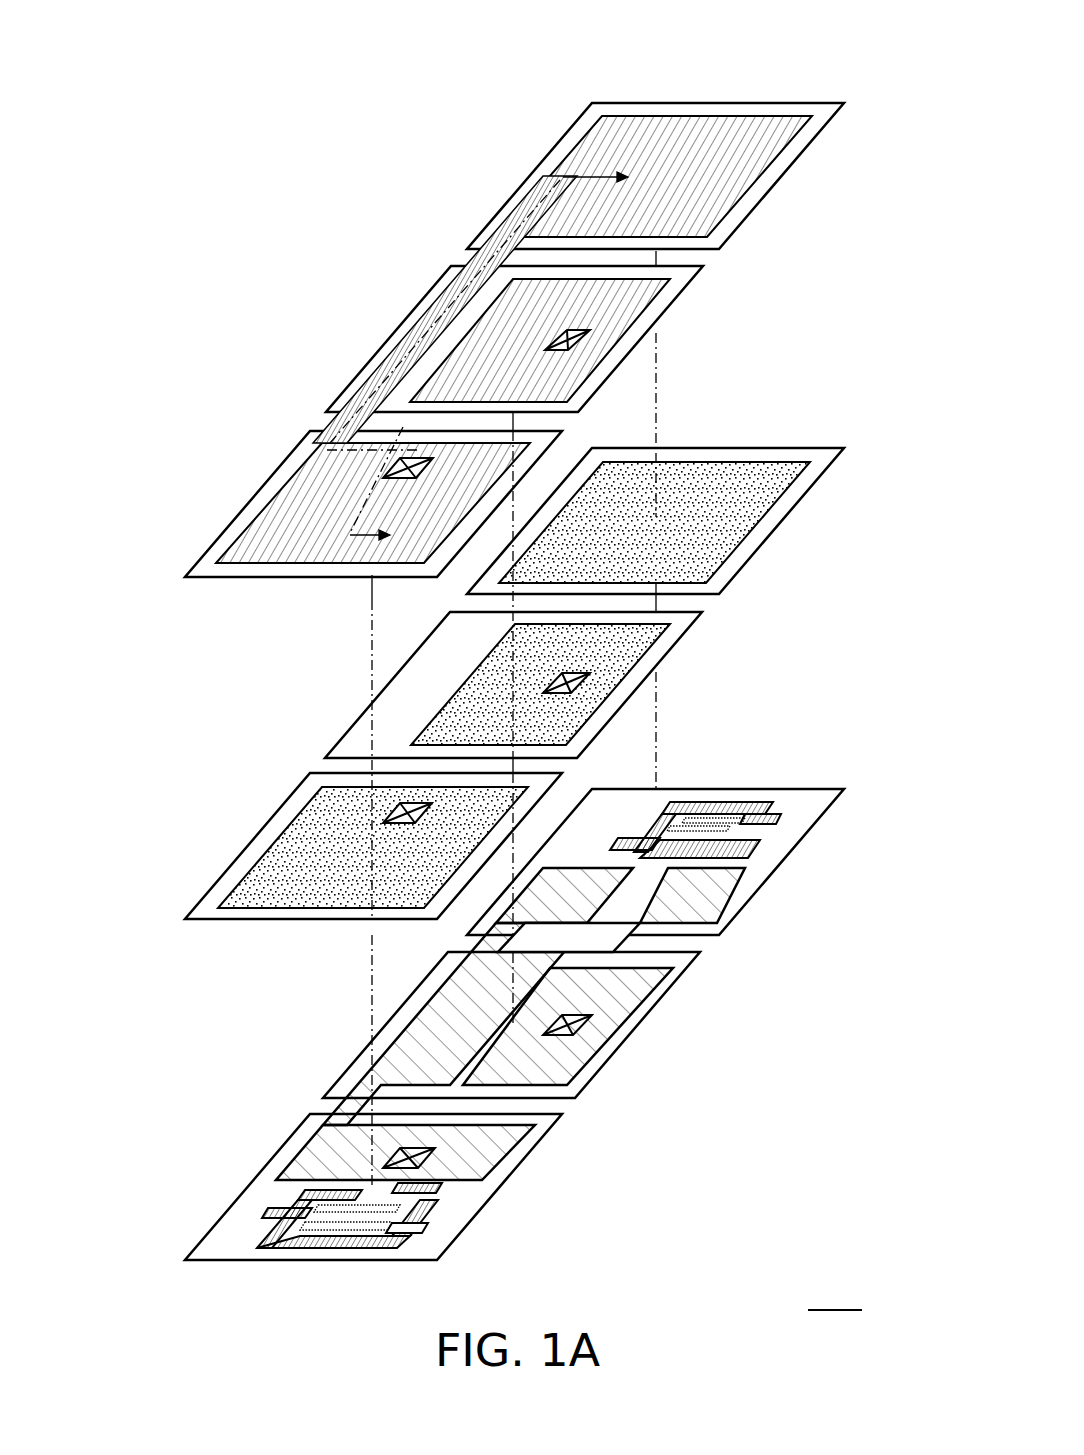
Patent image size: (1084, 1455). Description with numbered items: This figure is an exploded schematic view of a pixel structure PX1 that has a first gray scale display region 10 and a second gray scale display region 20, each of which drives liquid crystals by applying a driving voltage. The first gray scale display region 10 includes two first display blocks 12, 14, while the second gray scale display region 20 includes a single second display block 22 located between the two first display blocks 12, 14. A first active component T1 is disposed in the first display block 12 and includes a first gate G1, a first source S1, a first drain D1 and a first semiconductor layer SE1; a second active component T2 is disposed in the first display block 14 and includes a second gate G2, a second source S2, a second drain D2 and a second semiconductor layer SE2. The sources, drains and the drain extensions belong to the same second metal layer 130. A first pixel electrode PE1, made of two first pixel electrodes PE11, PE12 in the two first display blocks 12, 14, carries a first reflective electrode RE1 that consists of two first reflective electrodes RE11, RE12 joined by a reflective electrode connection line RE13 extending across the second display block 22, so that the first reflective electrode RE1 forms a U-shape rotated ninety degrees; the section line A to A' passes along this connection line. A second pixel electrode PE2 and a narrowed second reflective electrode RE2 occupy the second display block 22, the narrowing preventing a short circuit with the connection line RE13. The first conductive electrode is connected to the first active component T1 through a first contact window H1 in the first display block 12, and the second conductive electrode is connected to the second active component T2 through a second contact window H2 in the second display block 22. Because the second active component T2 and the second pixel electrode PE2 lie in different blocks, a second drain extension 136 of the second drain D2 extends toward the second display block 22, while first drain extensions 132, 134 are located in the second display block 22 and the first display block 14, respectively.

The first active component T1 is at (270, 683).
The second active component T2 is at (459, 456).
The first gray scale display region 10 is at (484, 678).
The first display block 12 is at (200, 560).
The first display block 14 is at (484, 230).
The second gray scale display region 20 is at (530, 682).
The second display block 22 is at (363, 368).
The second metal layer 130 is at (422, 661).
The first drain extension 132 is at (420, 1010).
The first drain extension 134 is at (497, 912).
The second drain extension 136 is at (588, 1067).
The first pixel electrode PE1 is at (498, 549).
The first pixel electrode PE11 is at (300, 808).
The first pixel electrode PE12 is at (793, 483).
The second pixel electrode PE2 is at (460, 688).
The first reflective electrode RE1 is at (456, 334).
The first reflective electrode RE11 is at (296, 464).
The first reflective electrode RE12 is at (582, 140).
The reflective electrode connection line RE13 is at (442, 300).
The second reflective electrode RE2 is at (672, 298).
The first contact window H1 is at (388, 480).
The second contact window H2 is at (575, 348).
The first gate G1 is at (353, 1243).
The first source S1 is at (410, 1230).
The first drain D1 is at (292, 1247).
The first semiconductor layer SE1 is at (327, 1238).
The second gate G2 is at (762, 805).
The second source S2 is at (783, 818).
The second drain D2 is at (672, 837).
The second semiconductor layer SE2 is at (707, 827).
The section line end A is at (385, 537).
The section line end A' is at (614, 178).
The pixel structure PX1 is at (835, 1292).